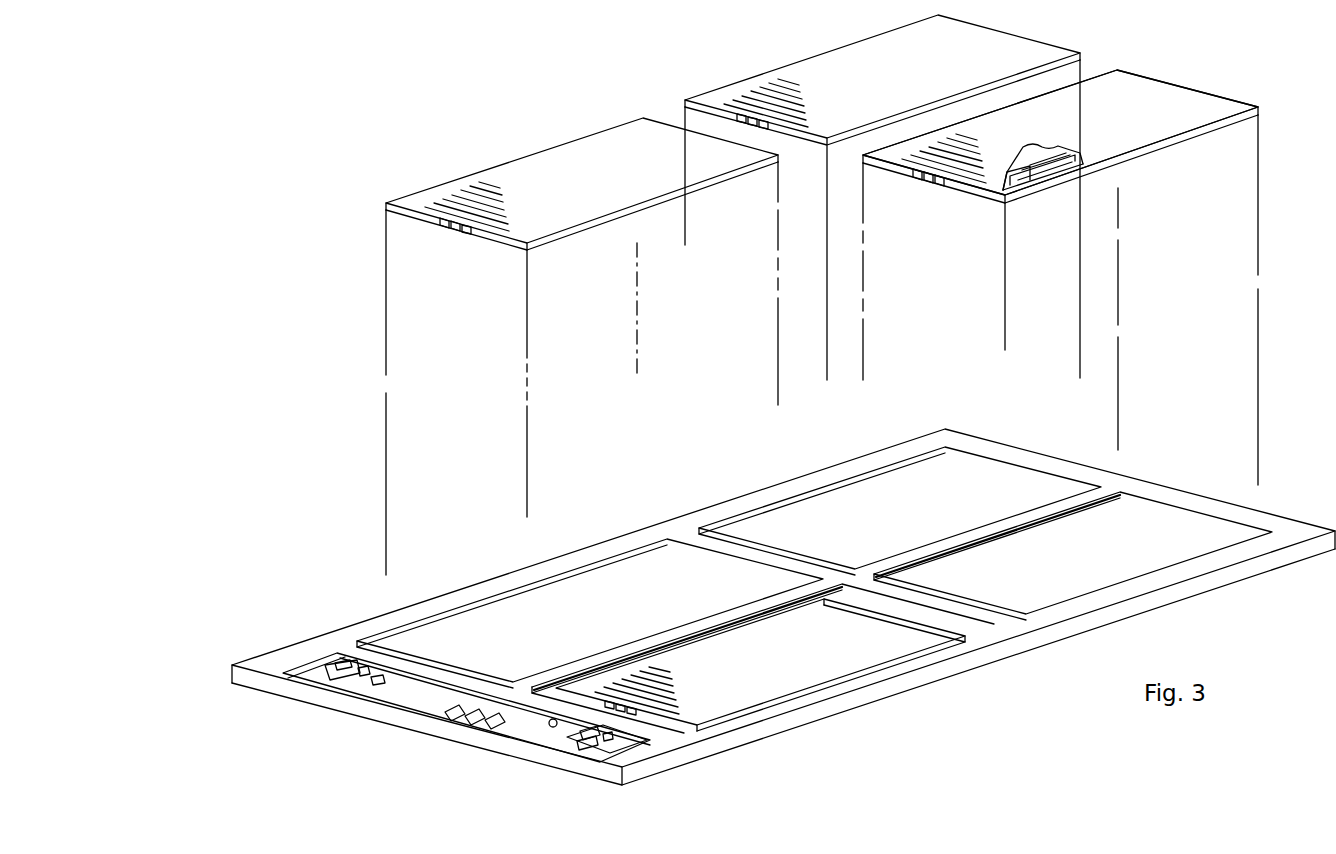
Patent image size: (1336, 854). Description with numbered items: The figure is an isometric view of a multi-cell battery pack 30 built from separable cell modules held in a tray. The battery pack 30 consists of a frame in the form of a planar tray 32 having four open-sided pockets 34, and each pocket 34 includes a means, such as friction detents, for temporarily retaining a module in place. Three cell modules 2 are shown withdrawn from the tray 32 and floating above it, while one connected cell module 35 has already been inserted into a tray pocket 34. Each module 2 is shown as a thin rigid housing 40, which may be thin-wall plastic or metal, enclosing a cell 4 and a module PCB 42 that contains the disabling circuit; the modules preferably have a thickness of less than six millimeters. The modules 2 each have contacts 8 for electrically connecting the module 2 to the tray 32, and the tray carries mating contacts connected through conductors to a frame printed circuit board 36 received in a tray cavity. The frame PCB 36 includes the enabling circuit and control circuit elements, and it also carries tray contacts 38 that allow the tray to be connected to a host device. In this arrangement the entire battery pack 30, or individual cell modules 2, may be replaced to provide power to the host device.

The cell module 2 is at (856, 295).
The cell 4 is at (1048, 165).
The contacts 8 is at (442, 228).
The battery pack 30 is at (739, 407).
The planar tray 32 is at (783, 609).
The open-sided pocket 34 is at (735, 527).
The connected cell module 35 is at (848, 662).
The frame printed circuit board 36 is at (466, 726).
The tray contacts 38 is at (507, 722).
The thin rigid housing 40 is at (1183, 107).
The module PCB 42 is at (1018, 182).